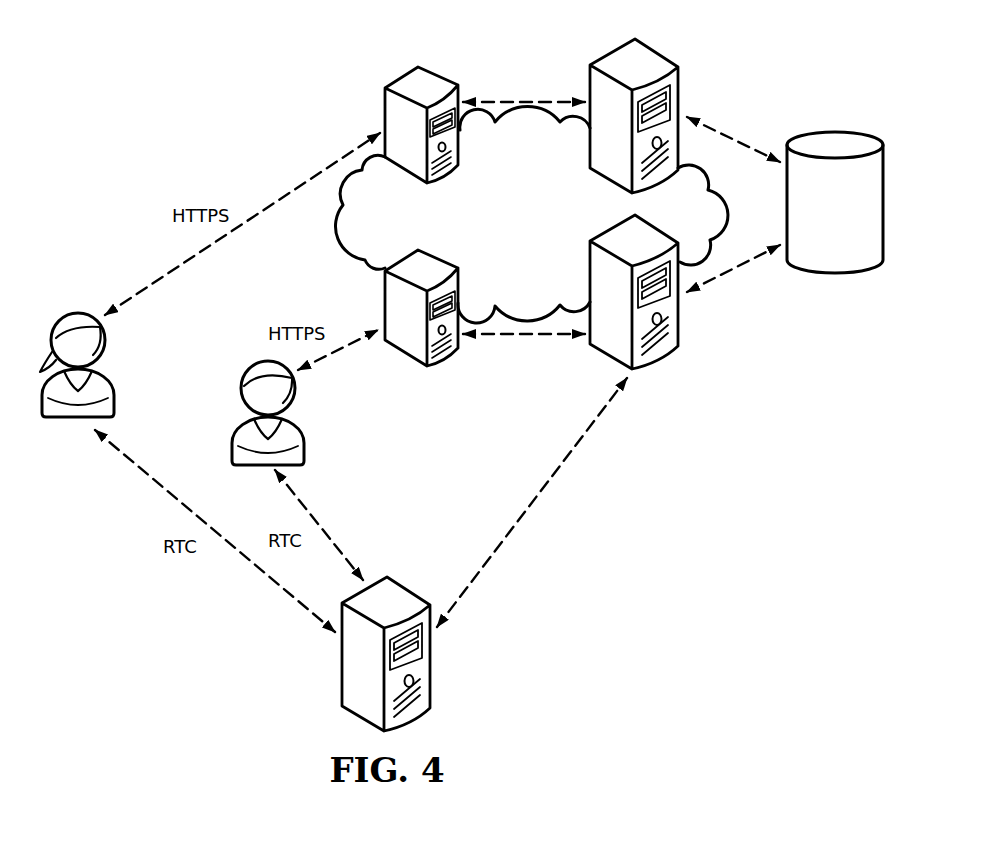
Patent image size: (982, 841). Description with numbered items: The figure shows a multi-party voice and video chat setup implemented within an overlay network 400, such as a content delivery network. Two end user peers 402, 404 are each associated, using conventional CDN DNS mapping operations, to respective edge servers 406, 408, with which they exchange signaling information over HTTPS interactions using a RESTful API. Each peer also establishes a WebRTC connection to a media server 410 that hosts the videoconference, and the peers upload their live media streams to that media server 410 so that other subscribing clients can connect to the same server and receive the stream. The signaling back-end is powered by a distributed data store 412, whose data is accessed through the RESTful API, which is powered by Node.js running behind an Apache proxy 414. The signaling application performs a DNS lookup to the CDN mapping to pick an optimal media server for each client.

The overlay network 400 is at (506, 232).
The end user peer 402 is at (78, 312).
The end user peer 404 is at (242, 388).
The edge server 406 is at (402, 75).
The edge server 408 is at (408, 356).
The media server 410 is at (342, 668).
The distributed data store 412 is at (813, 221).
The Apache proxy 414 is at (659, 362).